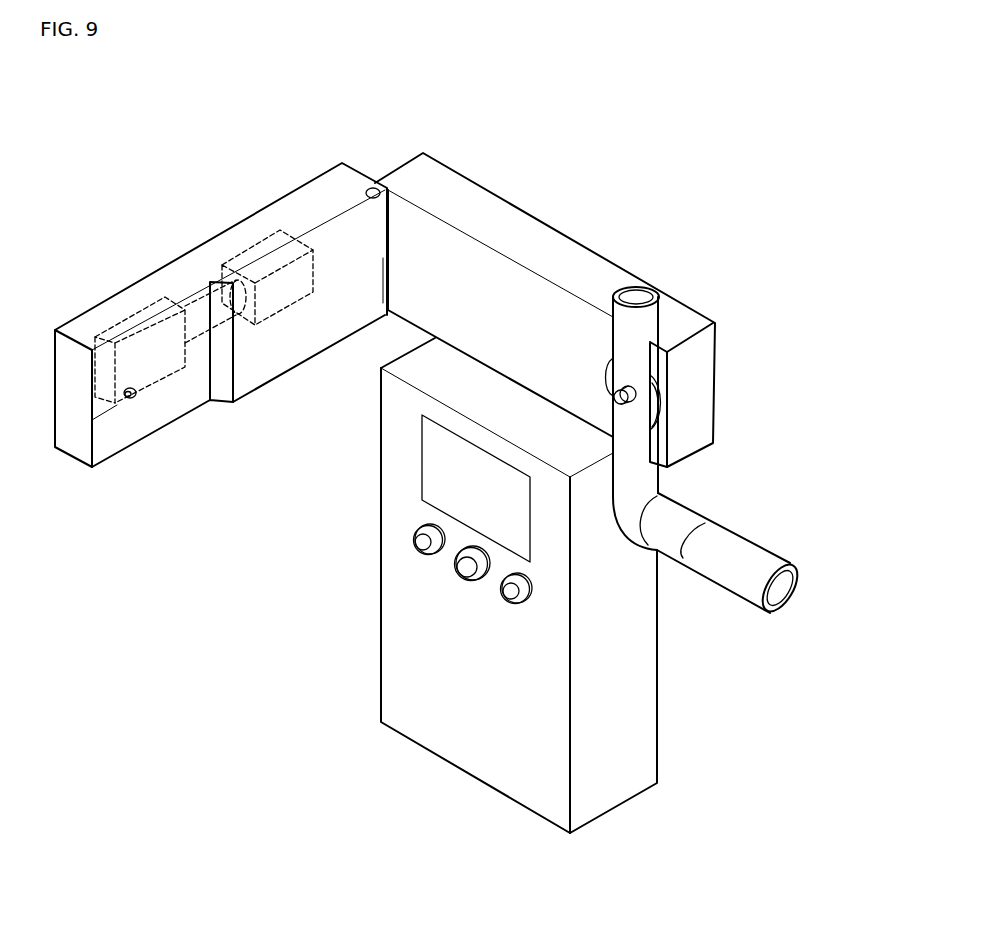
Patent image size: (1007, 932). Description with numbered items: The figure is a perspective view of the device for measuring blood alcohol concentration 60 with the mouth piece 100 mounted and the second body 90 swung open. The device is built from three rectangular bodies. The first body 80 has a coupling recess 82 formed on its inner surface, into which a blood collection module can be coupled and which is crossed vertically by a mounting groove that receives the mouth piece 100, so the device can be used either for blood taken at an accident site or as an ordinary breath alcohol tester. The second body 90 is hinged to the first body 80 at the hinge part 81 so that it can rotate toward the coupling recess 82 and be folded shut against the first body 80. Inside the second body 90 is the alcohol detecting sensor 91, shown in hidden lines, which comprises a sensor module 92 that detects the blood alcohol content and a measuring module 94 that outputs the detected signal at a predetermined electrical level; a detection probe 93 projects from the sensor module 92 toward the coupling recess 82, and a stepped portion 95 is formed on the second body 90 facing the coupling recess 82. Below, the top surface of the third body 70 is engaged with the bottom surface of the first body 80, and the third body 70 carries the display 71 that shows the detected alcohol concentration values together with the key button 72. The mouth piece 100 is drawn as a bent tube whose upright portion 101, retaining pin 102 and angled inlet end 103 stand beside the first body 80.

The device for measuring blood alcohol concentration 60 is at (602, 220).
The third body 70 is at (632, 658).
The display 71 is at (427, 468).
The key button 72 is at (417, 543).
The first body 80 is at (493, 213).
The hinge part 81 is at (373, 192).
The coupling recess 82 is at (658, 402).
The second body 90 is at (293, 210).
The alcohol detecting sensor 91 is at (55, 237).
The sensor module 92 is at (137, 350).
The detection probe 93 is at (130, 400).
The measuring module 94 is at (237, 260).
The stepped portion 95 is at (180, 400).
The mouth piece 100 is at (743, 537).
The vertical tube portion 101 is at (653, 318).
The fixing pin 102 is at (630, 388).
The inlet tube portion 103 is at (718, 577).